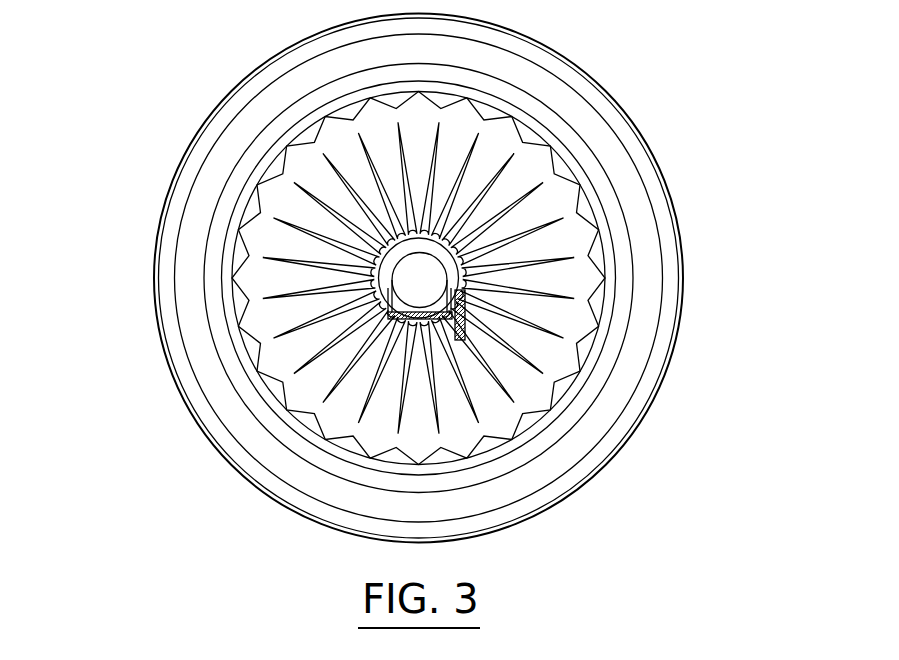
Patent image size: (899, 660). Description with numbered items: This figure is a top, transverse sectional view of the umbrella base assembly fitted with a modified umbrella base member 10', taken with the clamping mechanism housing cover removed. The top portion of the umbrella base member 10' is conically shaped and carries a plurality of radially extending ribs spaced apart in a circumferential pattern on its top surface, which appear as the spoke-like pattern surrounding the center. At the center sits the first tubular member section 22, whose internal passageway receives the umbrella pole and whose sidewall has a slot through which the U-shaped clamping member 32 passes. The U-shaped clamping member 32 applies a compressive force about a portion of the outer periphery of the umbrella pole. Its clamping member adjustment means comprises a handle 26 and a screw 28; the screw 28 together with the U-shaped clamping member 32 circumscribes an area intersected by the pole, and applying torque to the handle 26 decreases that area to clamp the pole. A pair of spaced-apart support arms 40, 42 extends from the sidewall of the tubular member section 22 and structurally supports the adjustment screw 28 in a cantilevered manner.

The umbrella base member 10' is at (457, 278).
The first tubular member section 22 is at (396, 267).
The handle 26 is at (468, 322).
The screw 28 is at (400, 318).
The U-shaped clamping member 32 is at (403, 288).
The support arm 40 is at (458, 278).
The support arm 42 is at (392, 297).